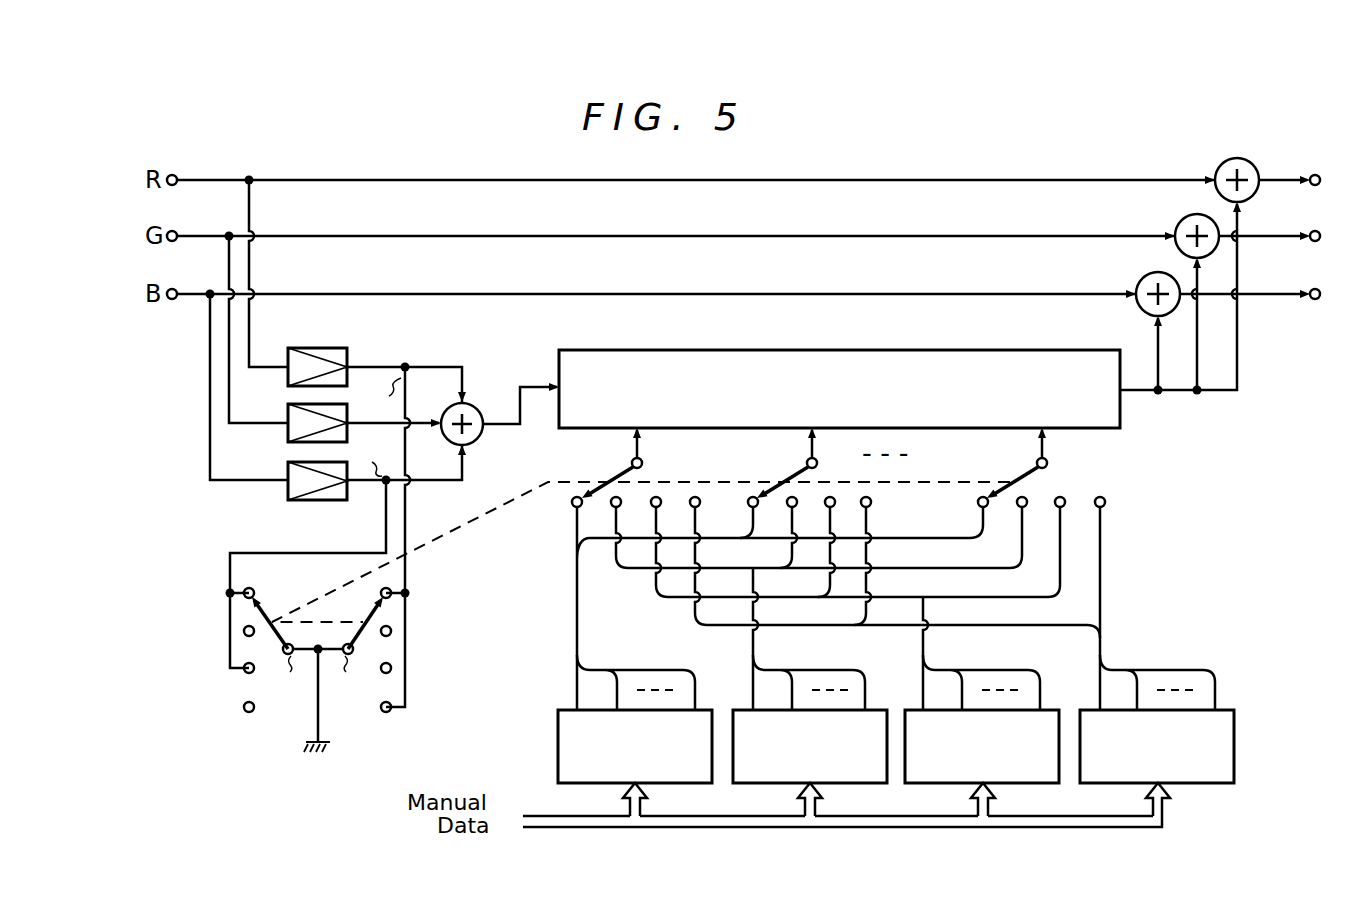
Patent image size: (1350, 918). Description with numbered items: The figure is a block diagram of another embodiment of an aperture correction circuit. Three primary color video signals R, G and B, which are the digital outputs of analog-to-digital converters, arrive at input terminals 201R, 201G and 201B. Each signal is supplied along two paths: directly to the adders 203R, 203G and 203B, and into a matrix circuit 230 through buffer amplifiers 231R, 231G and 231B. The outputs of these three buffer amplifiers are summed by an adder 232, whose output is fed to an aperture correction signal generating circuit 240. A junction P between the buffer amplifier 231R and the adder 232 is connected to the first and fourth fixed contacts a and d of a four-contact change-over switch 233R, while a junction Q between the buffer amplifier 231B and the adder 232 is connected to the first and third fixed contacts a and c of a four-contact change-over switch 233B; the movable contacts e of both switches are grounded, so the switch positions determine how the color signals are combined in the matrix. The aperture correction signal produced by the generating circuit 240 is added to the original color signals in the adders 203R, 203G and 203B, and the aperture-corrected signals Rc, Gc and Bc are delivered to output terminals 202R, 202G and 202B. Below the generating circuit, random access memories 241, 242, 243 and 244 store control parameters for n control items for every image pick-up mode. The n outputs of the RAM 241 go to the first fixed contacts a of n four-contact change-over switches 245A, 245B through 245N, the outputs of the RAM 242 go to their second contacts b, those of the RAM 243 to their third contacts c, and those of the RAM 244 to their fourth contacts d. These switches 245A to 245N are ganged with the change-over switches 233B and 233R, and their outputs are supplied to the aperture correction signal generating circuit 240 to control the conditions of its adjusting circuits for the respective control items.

The input terminal 201R is at (177, 175).
The input terminal 201G is at (167, 231).
The input terminal 201B is at (158, 290).
The output terminal 202R is at (1318, 186).
The output terminal 202G is at (1318, 242).
The output terminal 202B is at (1318, 300).
The adder 203R is at (1217, 166).
The adder 203G is at (1178, 228).
The adder 203B is at (1140, 288).
The matrix circuit 230 is at (427, 341).
The buffer amplifier 231R is at (276, 354).
The buffer amplifier 231G is at (280, 440).
The buffer amplifier 231B is at (285, 486).
The adder 232 is at (480, 394).
The 4-contact change-over switch 233B is at (275, 640).
The 4-contact change-over switch 233R is at (355, 640).
The aperture correction signal generating circuit 240 is at (1105, 429).
The RAM 241 is at (559, 711).
The RAM 242 is at (733, 706).
The RAM 243 is at (1048, 704).
The RAM 244 is at (1228, 704).
The 4-contact change-over switch 245A is at (624, 467).
The 4-contact change-over switch 245B is at (802, 467).
The 4-contact change-over switch 245N is at (1032, 467).